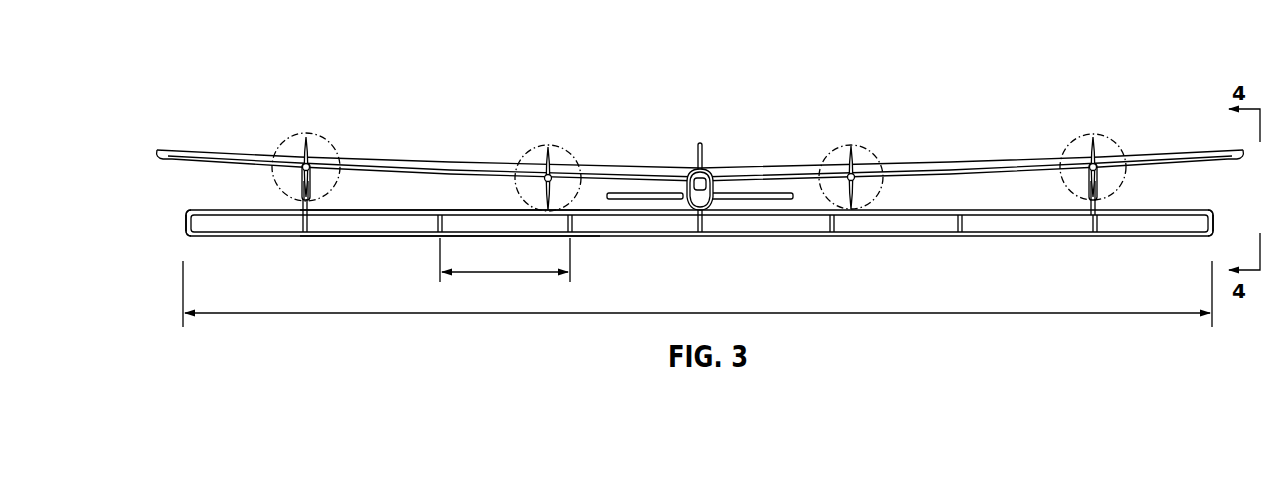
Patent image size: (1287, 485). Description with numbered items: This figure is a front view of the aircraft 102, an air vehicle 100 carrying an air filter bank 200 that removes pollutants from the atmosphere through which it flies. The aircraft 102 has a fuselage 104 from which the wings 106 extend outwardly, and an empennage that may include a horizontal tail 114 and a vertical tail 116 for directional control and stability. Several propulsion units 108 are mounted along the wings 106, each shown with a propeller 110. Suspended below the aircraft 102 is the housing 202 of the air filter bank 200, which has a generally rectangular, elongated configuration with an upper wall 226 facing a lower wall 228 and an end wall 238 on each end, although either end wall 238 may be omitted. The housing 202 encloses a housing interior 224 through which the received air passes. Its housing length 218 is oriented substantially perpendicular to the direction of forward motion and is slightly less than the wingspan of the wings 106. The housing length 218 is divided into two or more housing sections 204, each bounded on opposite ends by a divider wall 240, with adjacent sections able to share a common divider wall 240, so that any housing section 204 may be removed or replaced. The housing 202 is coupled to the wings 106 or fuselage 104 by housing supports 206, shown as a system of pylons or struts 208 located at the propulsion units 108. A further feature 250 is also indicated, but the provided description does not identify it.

The air vehicle 100 is at (597, 108).
The aircraft 102 is at (928, 160).
The fuselage 104 is at (713, 208).
The wings 106 is at (417, 160).
The propulsion units 108 is at (311, 168).
The propeller 110 is at (279, 148).
The horizontal tail 114 is at (760, 204).
The vertical tail 116 is at (701, 160).
The air filter bank 200 is at (248, 206).
The housing 202 is at (187, 239).
The housing section 204 is at (486, 273).
The housing support 206 is at (310, 206).
The struts 208 is at (1088, 196).
The housing length 218 is at (630, 313).
The housing interior 224 is at (1026, 224).
The upper wall 226 is at (419, 211).
The lower wall 228 is at (423, 238).
The end wall 238 is at (187, 221).
The divider wall 240 is at (572, 220).
The bottom surface 250 is at (929, 240).